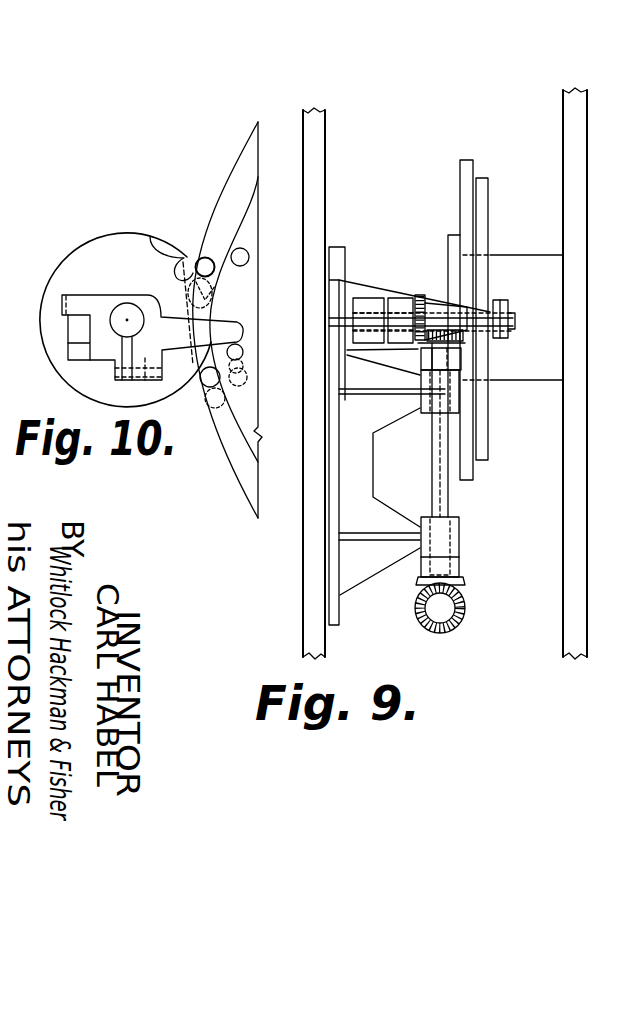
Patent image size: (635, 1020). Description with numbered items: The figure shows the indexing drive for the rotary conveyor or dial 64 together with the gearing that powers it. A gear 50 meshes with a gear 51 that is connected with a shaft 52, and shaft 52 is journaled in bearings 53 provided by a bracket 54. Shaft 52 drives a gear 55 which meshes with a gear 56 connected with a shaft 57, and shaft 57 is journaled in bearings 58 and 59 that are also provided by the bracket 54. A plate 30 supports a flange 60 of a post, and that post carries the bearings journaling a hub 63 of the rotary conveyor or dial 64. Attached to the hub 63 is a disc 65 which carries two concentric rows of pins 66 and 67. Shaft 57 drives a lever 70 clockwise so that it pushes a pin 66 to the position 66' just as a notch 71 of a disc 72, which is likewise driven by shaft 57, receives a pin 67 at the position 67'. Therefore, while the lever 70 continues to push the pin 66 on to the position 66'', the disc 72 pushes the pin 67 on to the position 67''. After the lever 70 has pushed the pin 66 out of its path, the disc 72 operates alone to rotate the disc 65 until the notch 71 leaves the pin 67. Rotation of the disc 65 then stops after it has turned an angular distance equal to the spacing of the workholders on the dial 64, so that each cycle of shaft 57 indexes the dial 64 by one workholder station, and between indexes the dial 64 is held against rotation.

In FIG. 9, the plate 30 is at (318, 150).
In FIG. 9, the gear 50 is at (437, 615).
In FIG. 9, the gear 51 is at (422, 583).
In FIG. 9, the shaft 52 is at (442, 497).
In FIG. 9, the bearings 53 is at (455, 402).
In FIG. 9, the bracket 54 is at (373, 460).
In FIG. 9, the gear 55 is at (455, 346).
In FIG. 9, the gear 56 is at (418, 296).
In FIG. 10, the shaft 57 is at (127, 317).
In FIG. 9, the shaft 57 is at (435, 315).
In FIG. 9, the bearing 58 is at (369, 298).
In FIG. 9, the bearing 59 is at (500, 303).
In FIG. 9, the flange 60 is at (337, 252).
In FIG. 9, the hub 63 is at (551, 266).
In FIG. 9, the rotary conveyor or dial 64 is at (587, 147).
In FIG. 10, the disc 65 is at (225, 179).
In FIG. 9, the disc 65 is at (483, 183).
In FIG. 10, the pins 66 is at (250, 365).
In FIG. 10, the pin position 66' is at (271, 378).
In FIG. 10, the pin position 66'' is at (257, 406).
In FIG. 10, the pins 67 is at (223, 247).
In FIG. 10, the pin position 67' is at (227, 291).
In FIG. 10, the pin position 67'' is at (237, 301).
In FIG. 10, the lever 70 is at (230, 332).
In FIG. 10, the notch 71 is at (150, 238).
In FIG. 10, the disc 72 is at (55, 273).